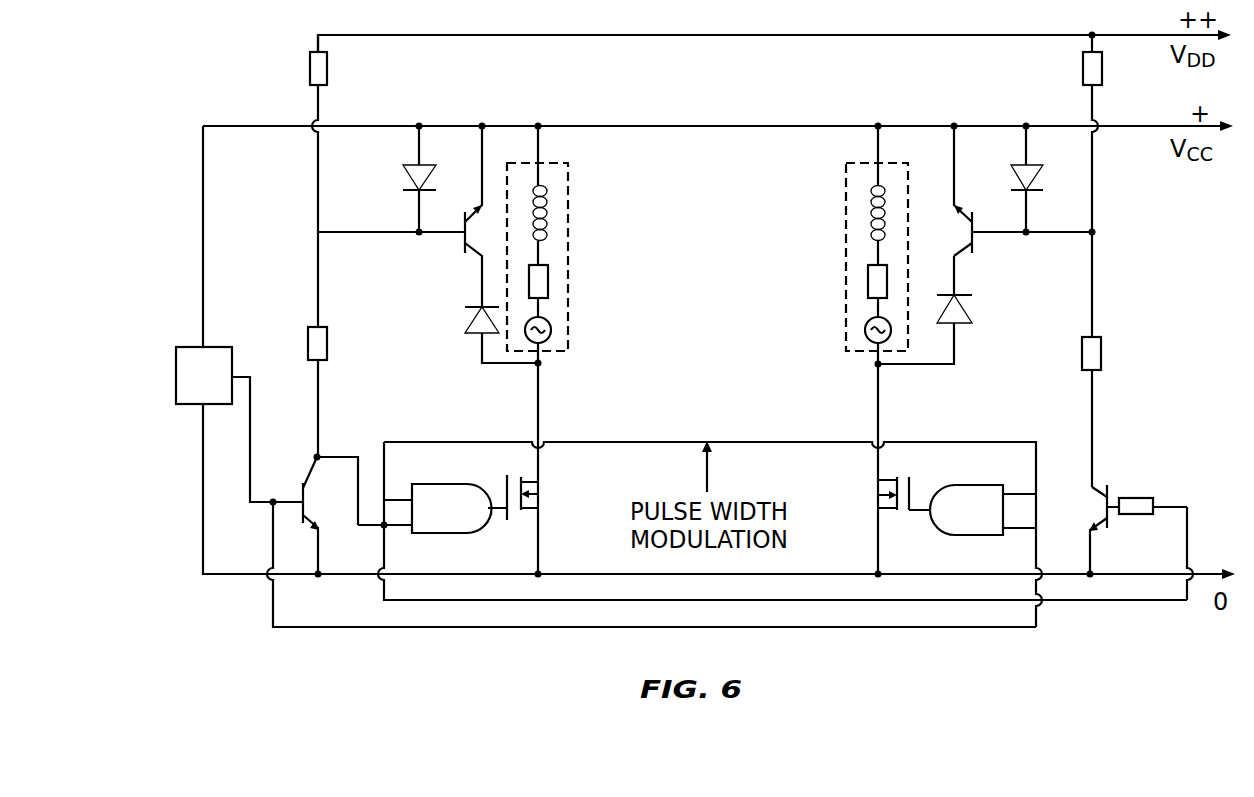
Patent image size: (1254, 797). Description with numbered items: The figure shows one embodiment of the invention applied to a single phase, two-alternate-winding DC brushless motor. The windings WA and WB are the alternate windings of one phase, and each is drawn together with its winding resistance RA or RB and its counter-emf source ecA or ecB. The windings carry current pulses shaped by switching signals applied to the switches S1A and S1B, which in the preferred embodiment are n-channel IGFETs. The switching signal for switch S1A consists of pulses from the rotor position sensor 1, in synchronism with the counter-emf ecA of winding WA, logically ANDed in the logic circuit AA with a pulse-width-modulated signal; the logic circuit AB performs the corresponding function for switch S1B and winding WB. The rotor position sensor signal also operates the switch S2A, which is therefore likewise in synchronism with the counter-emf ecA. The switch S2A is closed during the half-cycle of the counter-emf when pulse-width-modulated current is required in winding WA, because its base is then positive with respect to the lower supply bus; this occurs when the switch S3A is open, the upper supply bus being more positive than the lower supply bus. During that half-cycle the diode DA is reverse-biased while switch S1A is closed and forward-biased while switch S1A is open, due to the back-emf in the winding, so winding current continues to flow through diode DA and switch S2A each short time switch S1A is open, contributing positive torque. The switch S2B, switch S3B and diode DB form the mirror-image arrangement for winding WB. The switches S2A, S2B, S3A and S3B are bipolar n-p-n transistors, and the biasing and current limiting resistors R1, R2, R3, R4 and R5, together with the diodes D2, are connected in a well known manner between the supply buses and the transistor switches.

The rotor position sensor 1 is at (138, 375).
The biasing and current limiting resistor R1 is at (327, 60).
The biasing and current limiting resistor R2 is at (1102, 60).
The resistor R3 is at (327, 335).
The resistor R4 is at (1101, 345).
The resistor R5 is at (1130, 498).
The diode D2 is at (402, 182).
The diode DA is at (467, 320).
The diode DB is at (967, 307).
The switch S1A is at (507, 518).
The switch S1B is at (922, 500).
The switch S2A is at (462, 250).
The switch S2B is at (972, 242).
The switch S3A is at (318, 457).
The switch S3B is at (1092, 462).
The winding WA is at (568, 258).
The winding WB is at (845, 240).
The winding resistance RA is at (548, 282).
The winding resistance RB is at (868, 282).
The counter-emf ecA is at (551, 330).
The back-EMF voltage source ecB is at (865, 330).
The logic circuit AA is at (452, 508).
The AND gate AB is at (983, 510).